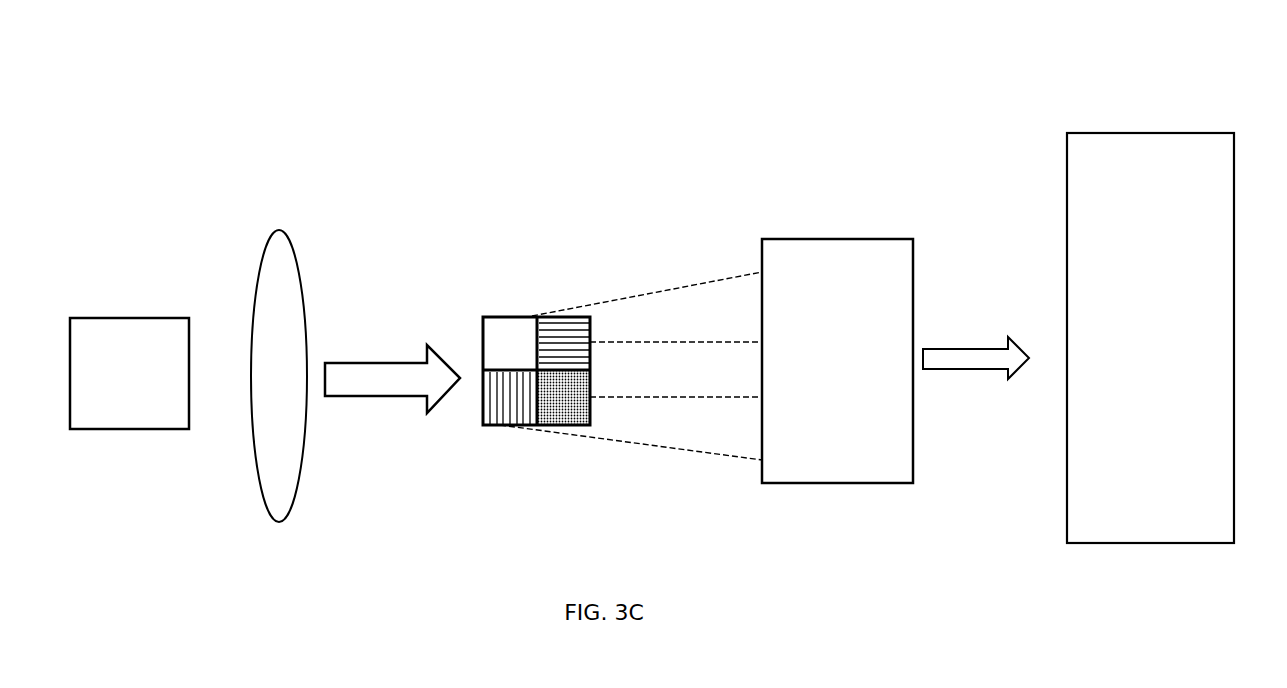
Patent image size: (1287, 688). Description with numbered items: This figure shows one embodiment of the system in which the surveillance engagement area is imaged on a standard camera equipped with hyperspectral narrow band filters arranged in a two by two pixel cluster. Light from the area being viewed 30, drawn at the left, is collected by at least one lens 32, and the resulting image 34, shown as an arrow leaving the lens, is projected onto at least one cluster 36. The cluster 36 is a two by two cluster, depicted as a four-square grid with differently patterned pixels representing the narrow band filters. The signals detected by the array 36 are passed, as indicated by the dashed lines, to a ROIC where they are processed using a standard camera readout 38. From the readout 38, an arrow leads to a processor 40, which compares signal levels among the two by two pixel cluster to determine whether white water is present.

The area being viewed 30 is at (134, 318).
The lens 32 is at (287, 317).
The image 34 is at (374, 352).
The cluster 36 is at (535, 305).
The standard camera readout 38 is at (822, 263).
The processor 40 is at (1086, 247).